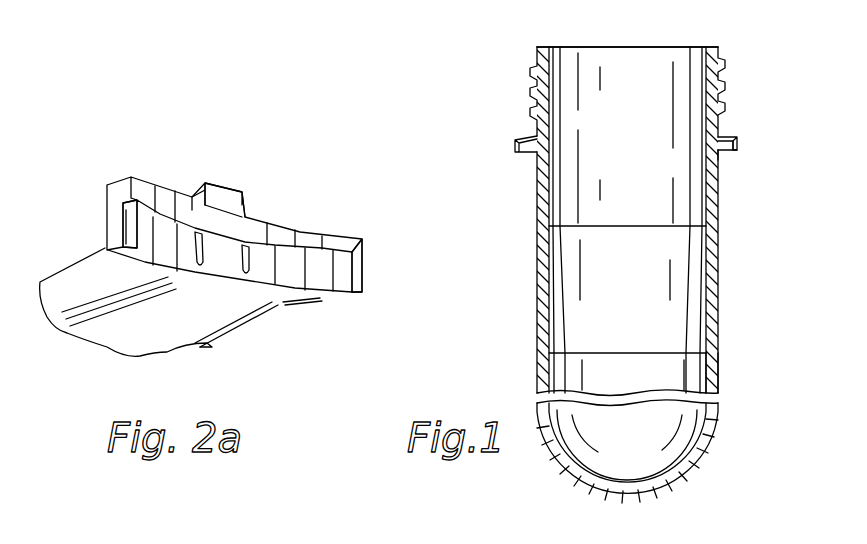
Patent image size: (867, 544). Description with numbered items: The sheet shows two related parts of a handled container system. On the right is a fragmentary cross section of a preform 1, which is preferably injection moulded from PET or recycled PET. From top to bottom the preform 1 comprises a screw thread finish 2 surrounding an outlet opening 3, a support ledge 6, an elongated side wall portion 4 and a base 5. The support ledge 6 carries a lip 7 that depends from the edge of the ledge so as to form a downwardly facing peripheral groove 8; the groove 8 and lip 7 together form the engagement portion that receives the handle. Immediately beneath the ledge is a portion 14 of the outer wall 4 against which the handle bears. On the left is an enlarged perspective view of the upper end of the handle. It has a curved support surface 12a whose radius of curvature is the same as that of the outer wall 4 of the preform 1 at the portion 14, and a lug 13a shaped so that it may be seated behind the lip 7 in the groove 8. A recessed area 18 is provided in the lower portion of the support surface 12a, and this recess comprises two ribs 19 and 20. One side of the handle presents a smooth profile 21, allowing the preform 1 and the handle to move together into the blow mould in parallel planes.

In FIG. 1, the preform 1 is at (511, 220).
In FIG. 1, the screw thread finish 2 is at (531, 82).
In FIG. 1, the outlet opening 3 is at (603, 53).
In FIG. 1, the elongated side wall portion 4 is at (722, 373).
In FIG. 1, the base 5 is at (705, 455).
In FIG. 1, the support ledge 6 is at (722, 141).
In FIG. 1, the lip 7 is at (729, 150).
In FIG. 1, the downwardly facing peripheral groove 8 is at (720, 150).
In FIG. 1, the portion 14 is at (537, 162).
In FIG. 2A, the curved support surface 12a is at (280, 230).
In FIG. 2A, the lug 13a is at (223, 196).
In FIG. 2A, the recessed area 18 is at (138, 222).
In FIG. 2A, the rib 19 is at (250, 272).
In FIG. 2A, the rib 20 is at (200, 266).
In FIG. 2A, the smooth profile 21 is at (332, 240).